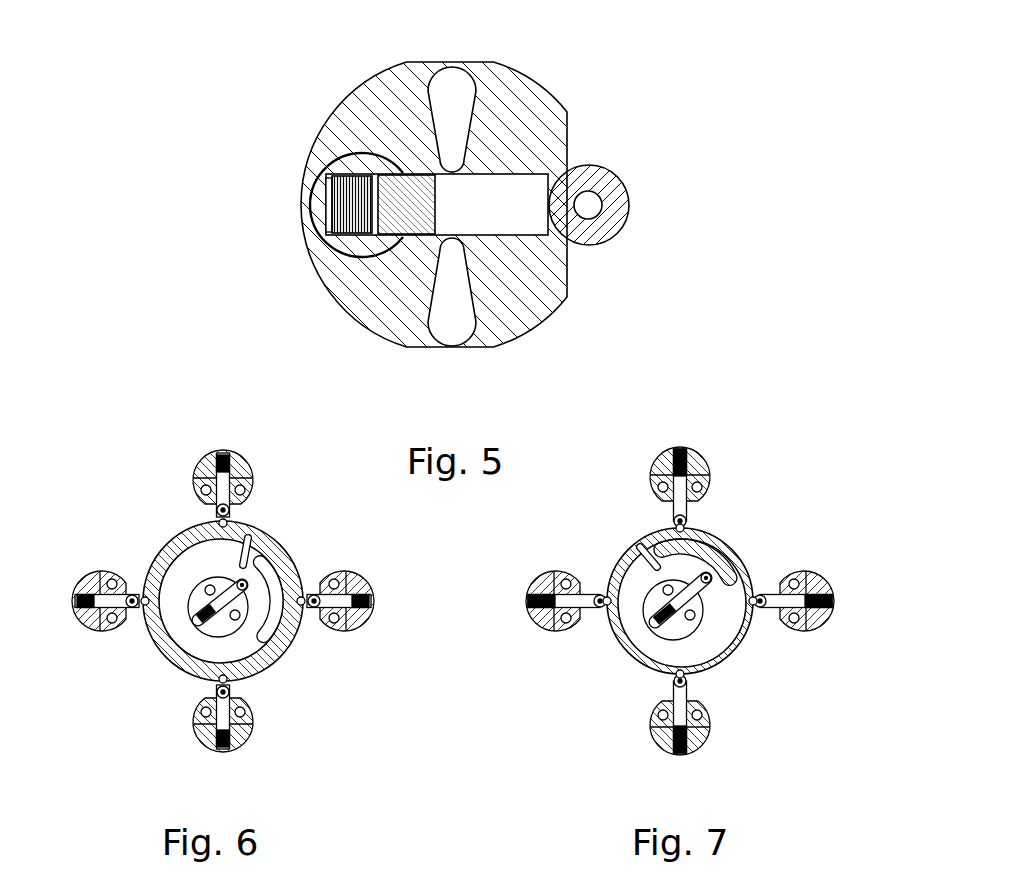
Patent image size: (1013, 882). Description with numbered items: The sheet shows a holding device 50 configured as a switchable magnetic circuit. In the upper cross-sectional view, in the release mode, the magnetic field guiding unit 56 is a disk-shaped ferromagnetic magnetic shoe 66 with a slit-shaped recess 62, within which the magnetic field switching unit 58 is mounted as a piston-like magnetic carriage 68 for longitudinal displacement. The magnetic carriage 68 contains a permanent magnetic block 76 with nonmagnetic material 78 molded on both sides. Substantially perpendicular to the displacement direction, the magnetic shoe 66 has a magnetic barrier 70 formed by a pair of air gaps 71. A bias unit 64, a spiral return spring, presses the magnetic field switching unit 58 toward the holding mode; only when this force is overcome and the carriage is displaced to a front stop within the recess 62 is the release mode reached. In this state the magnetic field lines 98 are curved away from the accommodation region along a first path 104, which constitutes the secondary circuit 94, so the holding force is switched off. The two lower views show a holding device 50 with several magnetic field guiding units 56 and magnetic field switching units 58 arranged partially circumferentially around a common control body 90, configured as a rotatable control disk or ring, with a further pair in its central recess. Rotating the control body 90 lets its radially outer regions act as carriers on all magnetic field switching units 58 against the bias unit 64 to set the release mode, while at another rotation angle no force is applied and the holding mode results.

In FIG. 5, the holding device 50 is at (260, 137).
In FIG. 6, the holding device 50 is at (93, 487).
In FIG. 7, the holding device 50 is at (776, 462).
In FIG. 5, the magnetic field guiding unit 56 is at (360, 112).
In FIG. 6, the magnetic field guiding unit 56 is at (198, 472).
In FIG. 7, the magnetic field guiding unit 56 is at (655, 470).
In FIG. 5, the magnetic field switching unit 58 is at (427, 228).
In FIG. 6, the magnetic field switching unit 58 is at (240, 472).
In FIG. 7, the magnetic field switching unit 58 is at (700, 478).
In FIG. 5, the recess 62 is at (333, 250).
In FIG. 5, the bias unit 64 is at (330, 190).
In FIG. 6, the bias unit 64 is at (228, 453).
In FIG. 7, the bias unit 64 is at (685, 450).
In FIG. 5, the magnetic shoe 66 is at (536, 104).
In FIG. 5, the magnetic carriage 68 is at (526, 222).
In FIG. 5, the magnetic barrier 70 is at (448, 58).
In FIG. 5, the air gaps 71 is at (456, 88).
In FIG. 5, the permanent magnetic block 76 is at (375, 78).
In FIG. 5, the nonmagnetic material 78 is at (514, 190).
In FIG. 6, the control body 90 is at (165, 562).
In FIG. 7, the control body 90 is at (625, 553).
In FIG. 5, the secondary circuit 94 is at (322, 224).
In FIG. 5, the magnetic field lines 98 is at (353, 153).
In FIG. 5, the first path 104 is at (358, 257).